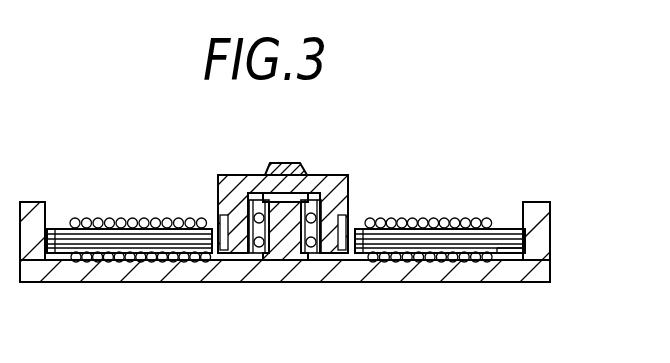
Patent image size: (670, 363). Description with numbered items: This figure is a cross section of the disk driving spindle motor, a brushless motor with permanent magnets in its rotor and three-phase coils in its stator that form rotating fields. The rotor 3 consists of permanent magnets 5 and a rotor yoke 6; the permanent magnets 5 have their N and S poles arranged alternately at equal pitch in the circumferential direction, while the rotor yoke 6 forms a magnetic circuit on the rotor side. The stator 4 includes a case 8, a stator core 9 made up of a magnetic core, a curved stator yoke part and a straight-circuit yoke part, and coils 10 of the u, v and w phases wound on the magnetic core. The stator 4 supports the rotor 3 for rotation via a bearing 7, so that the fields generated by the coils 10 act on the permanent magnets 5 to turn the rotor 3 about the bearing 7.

The rotor 3 is at (348, 192).
The stator 4 is at (551, 200).
The permanent magnets 5 is at (352, 214).
The rotor yoke 6 is at (217, 195).
The bearing 7 is at (257, 214).
The case 8 is at (482, 272).
The stator core 9 is at (57, 229).
The coils 10 is at (438, 222).